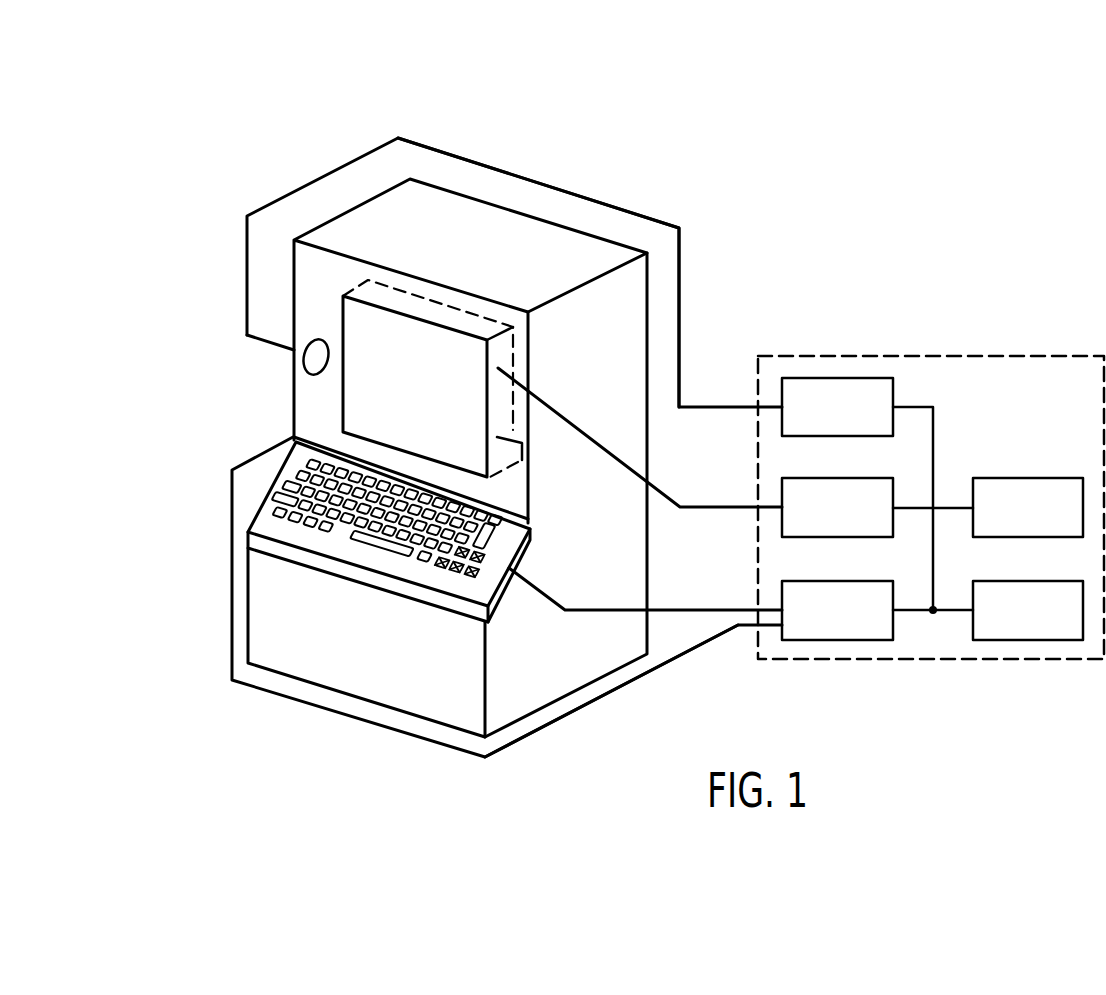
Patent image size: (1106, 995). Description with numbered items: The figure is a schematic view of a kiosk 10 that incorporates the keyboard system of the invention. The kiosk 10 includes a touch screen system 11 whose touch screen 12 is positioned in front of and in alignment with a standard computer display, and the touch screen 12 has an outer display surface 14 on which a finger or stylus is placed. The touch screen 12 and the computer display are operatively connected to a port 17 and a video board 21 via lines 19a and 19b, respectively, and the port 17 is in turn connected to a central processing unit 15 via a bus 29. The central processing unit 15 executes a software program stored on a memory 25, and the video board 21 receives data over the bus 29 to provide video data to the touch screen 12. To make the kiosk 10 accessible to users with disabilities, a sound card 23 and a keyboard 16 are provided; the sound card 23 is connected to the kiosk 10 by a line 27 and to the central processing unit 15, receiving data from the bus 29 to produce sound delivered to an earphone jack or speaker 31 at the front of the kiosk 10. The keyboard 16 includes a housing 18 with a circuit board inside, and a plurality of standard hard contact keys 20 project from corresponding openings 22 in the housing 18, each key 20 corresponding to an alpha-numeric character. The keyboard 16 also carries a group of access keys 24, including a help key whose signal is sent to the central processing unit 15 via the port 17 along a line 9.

The line 9 is at (577, 608).
The kiosk 10 is at (563, 164).
The touch screen system 11 is at (326, 397).
The touch screen 12 is at (399, 309).
The display surface 14 is at (423, 406).
The central processing unit 15 is at (1057, 581).
The keyboard 16 is at (306, 548).
The port 17 is at (880, 581).
The housing 18 is at (382, 584).
The line 19a is at (548, 727).
The line 19b is at (563, 413).
The keys 20 is at (415, 565).
The video board 21 is at (887, 478).
The openings 22 is at (532, 538).
The sound card 23 is at (822, 378).
The access keys 24 is at (485, 579).
The memory 25 is at (1045, 478).
The line 27 is at (639, 214).
The bus 29 is at (916, 611).
The speaker 31 is at (312, 340).